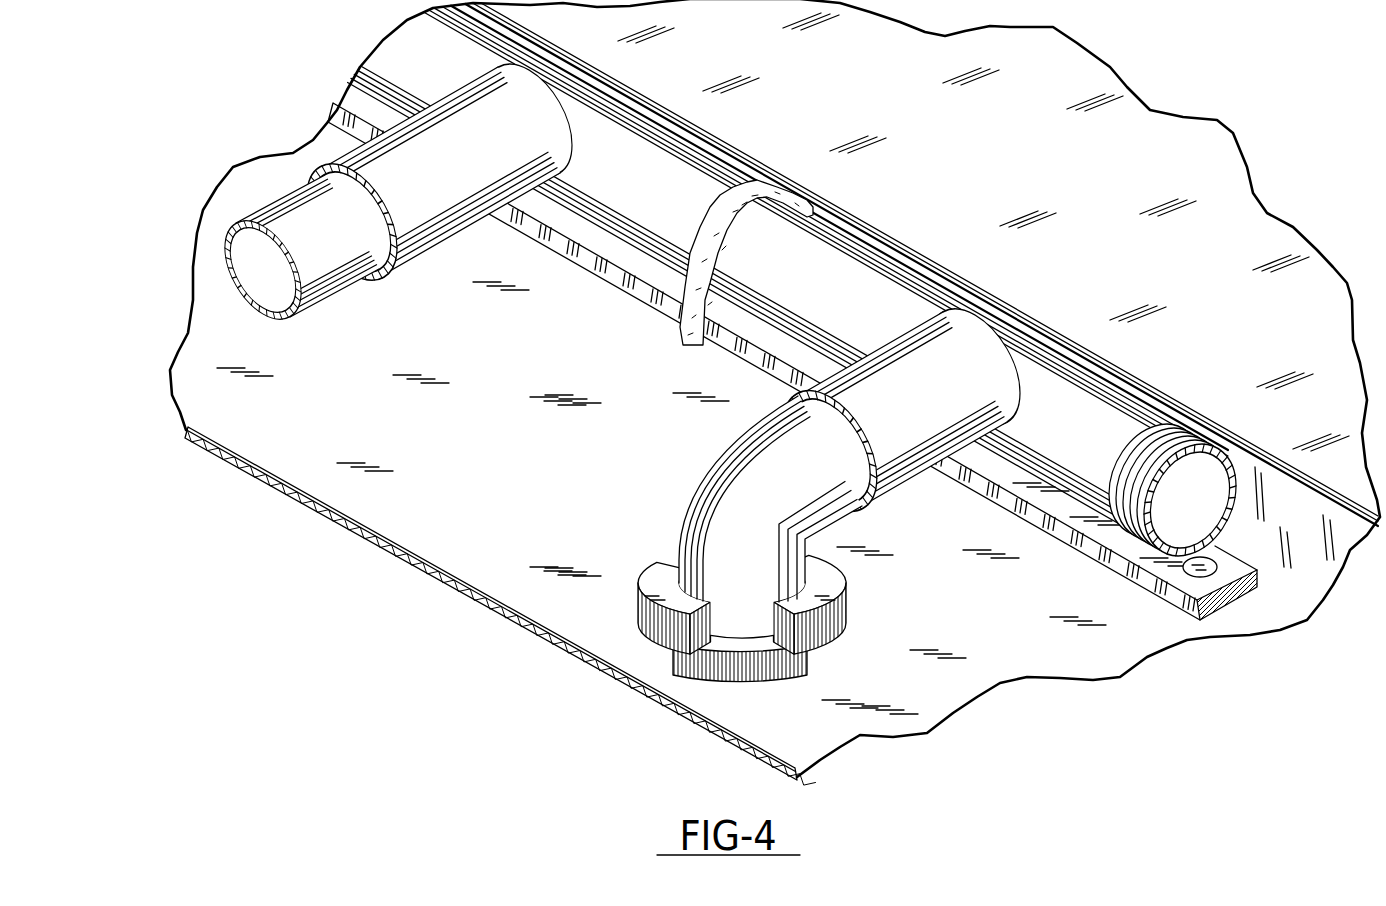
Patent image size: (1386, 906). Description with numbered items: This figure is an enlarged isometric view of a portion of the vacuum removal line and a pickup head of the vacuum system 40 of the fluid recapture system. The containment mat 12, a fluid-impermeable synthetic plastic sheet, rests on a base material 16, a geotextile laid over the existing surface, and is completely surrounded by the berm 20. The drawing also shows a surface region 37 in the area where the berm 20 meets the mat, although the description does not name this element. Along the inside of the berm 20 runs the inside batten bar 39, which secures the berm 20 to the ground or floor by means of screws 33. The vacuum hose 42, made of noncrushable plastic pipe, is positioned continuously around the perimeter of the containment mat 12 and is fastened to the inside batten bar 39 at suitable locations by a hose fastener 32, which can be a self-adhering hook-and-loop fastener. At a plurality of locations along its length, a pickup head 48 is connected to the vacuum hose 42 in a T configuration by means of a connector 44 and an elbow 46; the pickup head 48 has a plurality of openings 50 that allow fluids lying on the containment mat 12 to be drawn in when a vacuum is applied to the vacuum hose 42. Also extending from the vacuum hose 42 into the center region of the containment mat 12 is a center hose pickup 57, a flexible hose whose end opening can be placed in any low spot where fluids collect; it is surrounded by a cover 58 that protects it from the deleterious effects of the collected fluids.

The containment mat 12 is at (250, 473).
The base material 16 is at (470, 598).
The berm 20 is at (1307, 165).
The hose fastener 32 is at (754, 188).
The screws 33 is at (1197, 578).
The floor surface 37 is at (1075, 269).
The inside batten bar 39 is at (1237, 602).
The vacuum system 40 is at (612, 492).
The vacuum hose 42 is at (1083, 462).
The connector 44 is at (900, 437).
The elbow 46 is at (710, 498).
The pickup head 48 is at (772, 682).
The openings 50 is at (665, 653).
The center hose pickup 57 is at (302, 220).
The cover 58 is at (430, 197).